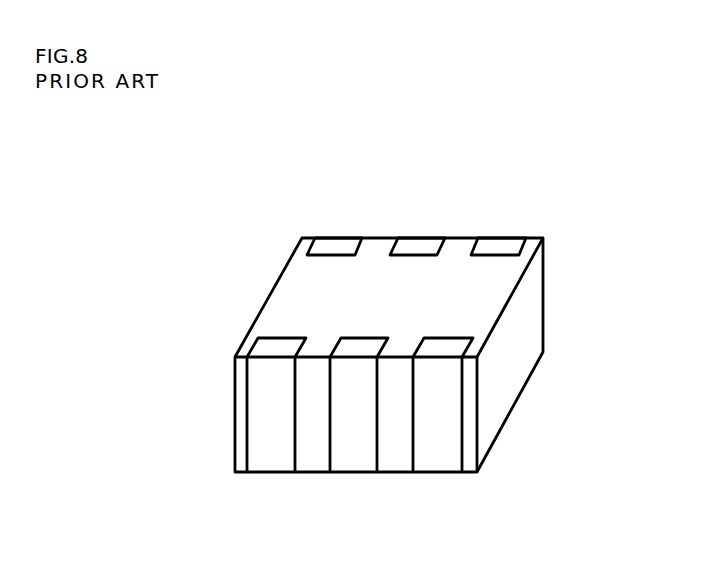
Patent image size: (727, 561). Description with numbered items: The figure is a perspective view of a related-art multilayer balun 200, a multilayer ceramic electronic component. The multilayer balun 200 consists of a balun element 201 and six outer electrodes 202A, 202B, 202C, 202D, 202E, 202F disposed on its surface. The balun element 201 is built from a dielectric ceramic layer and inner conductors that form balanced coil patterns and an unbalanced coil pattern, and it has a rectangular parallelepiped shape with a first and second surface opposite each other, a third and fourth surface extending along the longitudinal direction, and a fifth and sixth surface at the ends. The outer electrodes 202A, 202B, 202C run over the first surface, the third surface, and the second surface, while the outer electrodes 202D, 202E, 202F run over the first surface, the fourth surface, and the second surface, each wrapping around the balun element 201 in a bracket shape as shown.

The multilayer balun 200 is at (626, 169).
The balun element 201 is at (310, 297).
The outer electrode 202A is at (336, 238).
The outer electrode 202B is at (418, 238).
The outer electrode 202C is at (503, 238).
The outer electrode 202D is at (273, 440).
The outer electrode 202E is at (355, 440).
The outer electrode 202F is at (437, 440).